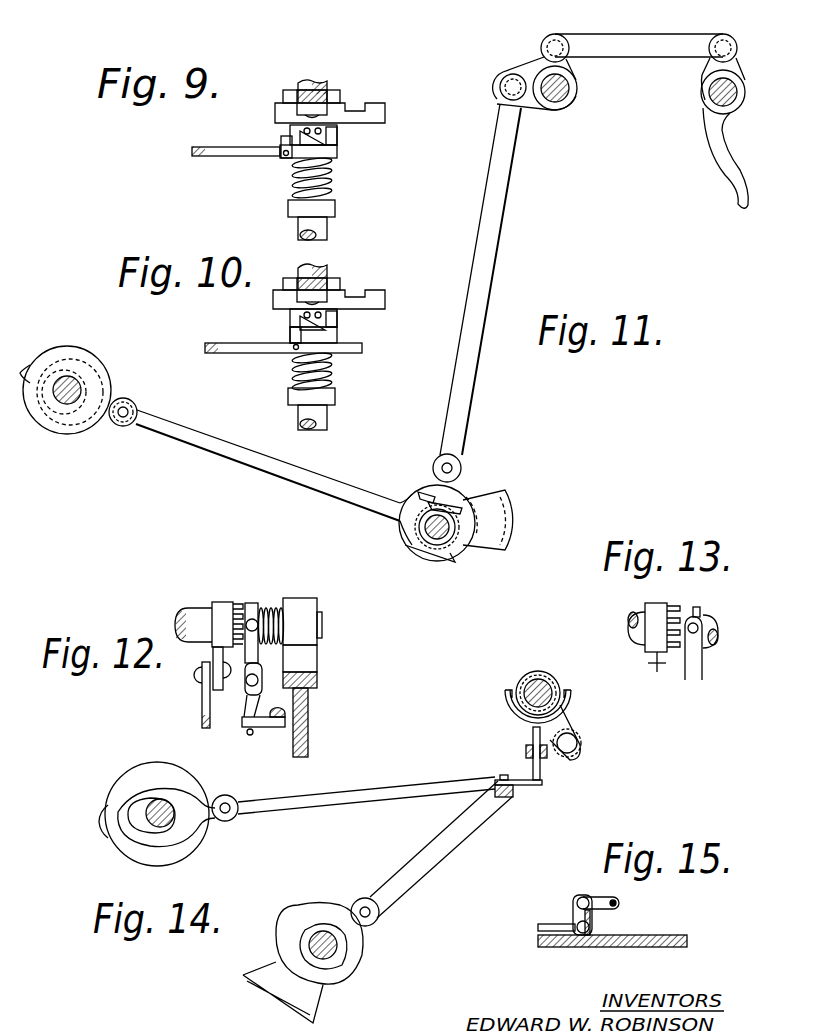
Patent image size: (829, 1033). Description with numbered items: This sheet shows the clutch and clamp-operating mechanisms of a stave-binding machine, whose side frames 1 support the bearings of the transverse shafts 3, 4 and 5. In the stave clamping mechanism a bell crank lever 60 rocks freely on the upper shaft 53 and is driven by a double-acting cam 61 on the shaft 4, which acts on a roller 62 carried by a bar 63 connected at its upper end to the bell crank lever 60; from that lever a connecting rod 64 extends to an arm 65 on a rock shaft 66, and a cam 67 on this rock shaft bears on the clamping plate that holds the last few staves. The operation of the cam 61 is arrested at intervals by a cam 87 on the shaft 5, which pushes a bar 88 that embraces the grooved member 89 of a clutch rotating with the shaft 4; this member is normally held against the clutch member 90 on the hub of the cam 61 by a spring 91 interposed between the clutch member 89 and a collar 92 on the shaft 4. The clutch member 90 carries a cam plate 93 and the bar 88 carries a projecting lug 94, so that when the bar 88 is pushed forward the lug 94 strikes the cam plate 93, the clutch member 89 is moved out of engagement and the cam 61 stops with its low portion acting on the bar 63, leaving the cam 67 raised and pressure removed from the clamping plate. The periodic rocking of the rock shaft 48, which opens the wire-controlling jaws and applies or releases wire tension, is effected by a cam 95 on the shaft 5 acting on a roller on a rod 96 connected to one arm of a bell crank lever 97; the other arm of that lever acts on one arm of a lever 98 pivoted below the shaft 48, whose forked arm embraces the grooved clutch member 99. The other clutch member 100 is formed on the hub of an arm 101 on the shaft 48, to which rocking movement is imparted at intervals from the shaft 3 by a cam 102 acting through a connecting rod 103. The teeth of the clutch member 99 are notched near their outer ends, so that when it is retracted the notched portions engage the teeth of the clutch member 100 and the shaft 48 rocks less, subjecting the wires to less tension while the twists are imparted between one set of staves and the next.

In FIG. 12, the side frames 1 is at (308, 743).
In FIG. 15, the side frames 1 is at (672, 942).
In FIG. 14, the shaft 3 is at (335, 950).
In FIG. 9, the shaft 4 is at (310, 80).
In FIG. 10, the shaft 4 is at (314, 266).
In FIG. 11, the shaft 4 is at (445, 527).
In FIG. 11, the shaft 5 is at (65, 404).
In FIG. 14, the shaft 5 is at (165, 825).
In FIG. 12, the rock shaft 48 is at (336, 630).
In FIG. 13, the rock shaft 48 is at (628, 629).
In FIG. 14, the rock shaft 48 is at (548, 688).
In FIG. 11, the upper shaft 53 is at (567, 95).
In FIG. 11, the bell crank lever 60 is at (538, 67).
In FIG. 9, the double-acting cam 61 is at (280, 111).
In FIG. 10, the double-acting cam 61 is at (280, 299).
In FIG. 11, the double-acting cam 61 is at (510, 516).
In FIG. 9, the roller 62 is at (302, 98).
In FIG. 10, the roller 62 is at (322, 290).
In FIG. 11, the roller 62 is at (458, 460).
In FIG. 9, the bar 63 is at (335, 95).
In FIG. 10, the bar 63 is at (300, 282).
In FIG. 11, the bar 63 is at (476, 258).
In FIG. 11, the connecting rod 64 is at (639, 48).
In FIG. 11, the arm 65 is at (705, 68).
In FIG. 11, the rock shaft 66 is at (712, 100).
In FIG. 11, the cam 67 is at (725, 172).
In FIG. 11, the cam 87 is at (70, 350).
In FIG. 9, the bar 88 is at (243, 156).
In FIG. 10, the bar 88 is at (247, 353).
In FIG. 11, the bar 88 is at (268, 467).
In FIG. 9, the clutch member 89 is at (337, 146).
In FIG. 10, the clutch member 89 is at (337, 334).
In FIG. 9, the clutch member 90 is at (337, 130).
In FIG. 10, the clutch member 90 is at (337, 316).
In FIG. 9, the spring 91 is at (333, 178).
In FIG. 10, the spring 91 is at (333, 372).
In FIG. 9, the collar 92 is at (335, 210).
In FIG. 10, the collar 92 is at (335, 396).
In FIG. 11, the collar 92 is at (458, 548).
In FIG. 9, the cam plate 93 is at (300, 133).
In FIG. 10, the cam plate 93 is at (300, 326).
In FIG. 11, the cam plate 93 is at (462, 505).
In FIG. 9, the projecting lug 94 is at (285, 146).
In FIG. 10, the projecting lug 94 is at (295, 333).
In FIG. 11, the projecting lug 94 is at (420, 494).
In FIG. 14, the cam 95 is at (157, 814).
In FIG. 12, the rod 96 is at (286, 712).
In FIG. 14, the rod 96 is at (350, 790).
In FIG. 15, the rod 96 is at (545, 923).
In FIG. 12, the bell crank lever 97 is at (264, 727).
In FIG. 14, the bell crank lever 97 is at (528, 786).
In FIG. 15, the bell crank lever 97 is at (592, 915).
In FIG. 12, the lever 98 is at (256, 667).
In FIG. 13, the lever 98 is at (702, 660).
In FIG. 14, the lever 98 is at (533, 733).
In FIG. 15, the lever 98 is at (620, 903).
In FIG. 12, the clutch member 99 is at (252, 603).
In FIG. 13, the clutch member 99 is at (686, 612).
In FIG. 14, the clutch member 99 is at (538, 672).
In FIG. 12, the clutch member 100 is at (222, 605).
In FIG. 13, the clutch member 100 is at (652, 608).
In FIG. 12, the arm 101 is at (218, 690).
In FIG. 13, the arm 101 is at (640, 662).
In FIG. 14, the arm 101 is at (570, 720).
In FIG. 14, the cam 102 is at (312, 908).
In FIG. 12, the connecting rod 103 is at (202, 705).
In FIG. 14, the connecting rod 103 is at (440, 852).